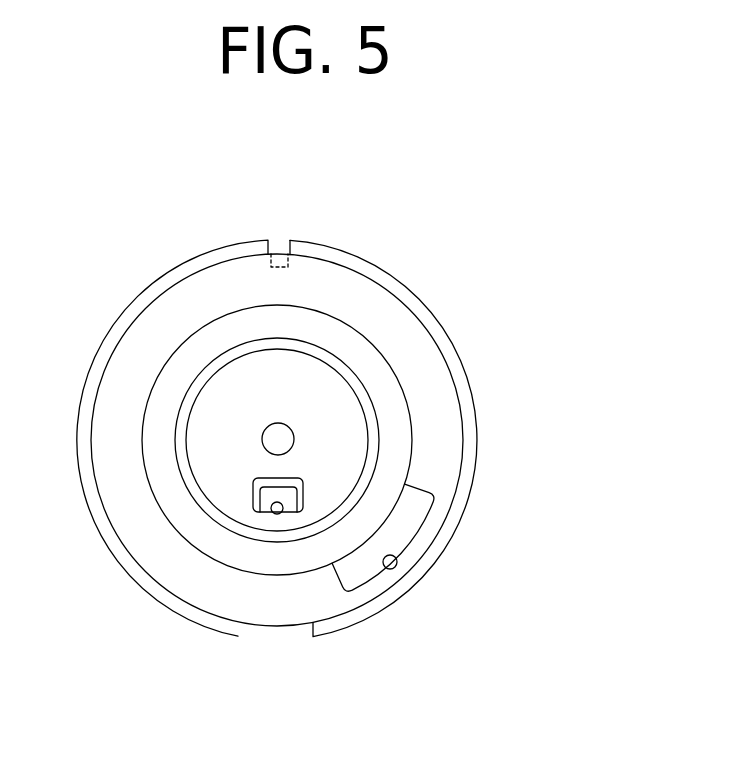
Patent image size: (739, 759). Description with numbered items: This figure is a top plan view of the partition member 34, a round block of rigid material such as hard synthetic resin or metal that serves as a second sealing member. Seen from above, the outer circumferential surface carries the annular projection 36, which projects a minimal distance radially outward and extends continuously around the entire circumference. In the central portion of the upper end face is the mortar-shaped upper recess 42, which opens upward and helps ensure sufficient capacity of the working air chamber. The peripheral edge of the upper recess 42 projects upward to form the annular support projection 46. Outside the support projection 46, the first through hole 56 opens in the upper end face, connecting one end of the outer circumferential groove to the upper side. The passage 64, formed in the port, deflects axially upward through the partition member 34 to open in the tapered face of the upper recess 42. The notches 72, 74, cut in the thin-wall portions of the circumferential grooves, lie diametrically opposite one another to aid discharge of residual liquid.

The partition member 34 is at (123, 268).
The annular projection 36 is at (470, 406).
The upper recess 42 is at (325, 390).
The annular support projection 46 is at (185, 510).
The first through hole 56 is at (387, 567).
The passage 64 is at (280, 513).
The notch 72 is at (285, 250).
The notch 74 is at (243, 632).